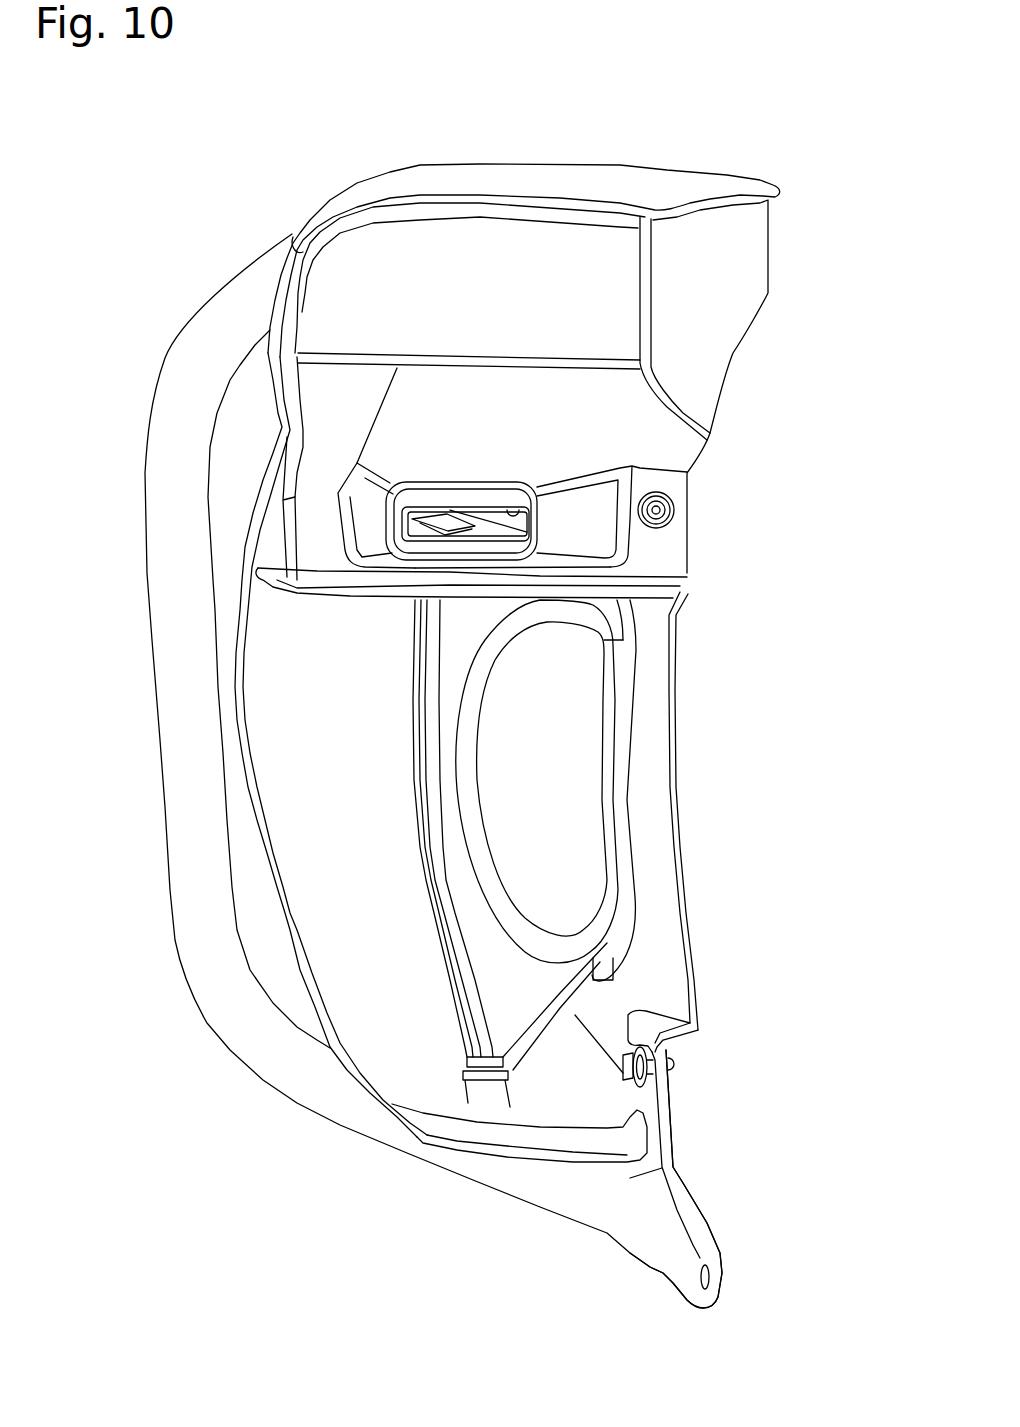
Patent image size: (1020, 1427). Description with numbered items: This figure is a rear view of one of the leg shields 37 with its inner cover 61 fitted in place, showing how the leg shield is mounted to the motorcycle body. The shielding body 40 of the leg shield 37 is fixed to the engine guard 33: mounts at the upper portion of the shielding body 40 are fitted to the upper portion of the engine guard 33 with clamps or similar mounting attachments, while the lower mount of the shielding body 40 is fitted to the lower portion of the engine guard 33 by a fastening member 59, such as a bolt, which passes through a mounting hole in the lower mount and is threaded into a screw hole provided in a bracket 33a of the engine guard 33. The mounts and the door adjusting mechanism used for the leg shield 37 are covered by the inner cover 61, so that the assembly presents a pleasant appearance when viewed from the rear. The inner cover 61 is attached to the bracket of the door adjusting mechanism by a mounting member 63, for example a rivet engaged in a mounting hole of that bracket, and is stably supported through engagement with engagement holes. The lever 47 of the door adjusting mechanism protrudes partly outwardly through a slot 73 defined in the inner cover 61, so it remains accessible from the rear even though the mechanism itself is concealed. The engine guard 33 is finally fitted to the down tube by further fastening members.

The engine guard 33 is at (217, 1033).
The bracket 33a is at (676, 1118).
The leg shield 37 is at (633, 157).
The shielding body 40 is at (530, 168).
The lever 47 is at (423, 527).
The fastening member 59 is at (628, 1077).
The inner cover 61 is at (673, 453).
The mounting member 63 is at (672, 527).
The slot 73 is at (533, 485).